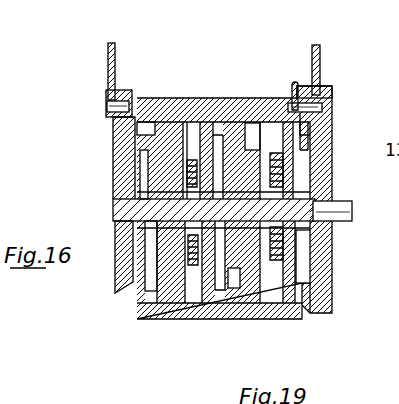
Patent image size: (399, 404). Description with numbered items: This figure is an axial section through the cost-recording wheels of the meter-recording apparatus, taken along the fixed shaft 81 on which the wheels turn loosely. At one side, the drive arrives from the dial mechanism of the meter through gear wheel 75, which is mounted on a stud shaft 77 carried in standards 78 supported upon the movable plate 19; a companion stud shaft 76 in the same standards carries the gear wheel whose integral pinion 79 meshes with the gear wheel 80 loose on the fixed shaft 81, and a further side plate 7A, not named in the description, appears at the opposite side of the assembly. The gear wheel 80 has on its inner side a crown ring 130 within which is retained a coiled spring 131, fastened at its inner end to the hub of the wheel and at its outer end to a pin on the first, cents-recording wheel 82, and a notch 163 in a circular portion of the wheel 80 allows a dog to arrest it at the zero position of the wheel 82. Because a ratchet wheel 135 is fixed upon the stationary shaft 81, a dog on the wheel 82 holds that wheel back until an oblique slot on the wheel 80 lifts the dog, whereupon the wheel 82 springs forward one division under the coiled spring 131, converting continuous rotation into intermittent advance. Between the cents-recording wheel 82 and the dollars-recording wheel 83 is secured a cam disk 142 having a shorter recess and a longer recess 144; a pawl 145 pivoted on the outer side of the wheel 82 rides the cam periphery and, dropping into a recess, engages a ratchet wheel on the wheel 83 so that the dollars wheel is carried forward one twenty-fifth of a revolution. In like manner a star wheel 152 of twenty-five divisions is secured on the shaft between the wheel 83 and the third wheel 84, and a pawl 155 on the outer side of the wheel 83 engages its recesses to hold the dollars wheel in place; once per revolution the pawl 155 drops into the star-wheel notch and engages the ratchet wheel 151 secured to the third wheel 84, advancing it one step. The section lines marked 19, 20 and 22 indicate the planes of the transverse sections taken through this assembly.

The gear wheel 75 is at (110, 62).
The stud shaft 77 is at (125, 100).
The standard 78 is at (113, 189).
The side plate 7A is at (321, 65).
The stud shaft 76 is at (328, 97).
The pinion 79 is at (294, 83).
The notch 163 is at (332, 117).
The coiled spring 131 is at (332, 137).
The ratchet wheel 135 is at (268, 100).
The pawl 145 is at (233, 97).
The longer recess 144 is at (195, 100).
The pawl 155 is at (182, 97).
The section line 22 is at (183, 100).
The section line 20 is at (215, 98).
The movable plate 19 is at (224, 98).
The fixed shaft 81 is at (338, 223).
The gear wheel 80 is at (303, 260).
The ratchet wheel 151 is at (178, 243).
The third wheel 84 is at (162, 319).
The star wheel 152 is at (183, 319).
The cam disk 142 is at (208, 319).
The dollars-recording wheel 83 is at (175, 341).
The cents-recording wheel 82 is at (258, 319).
The crown ring 130 is at (283, 319).